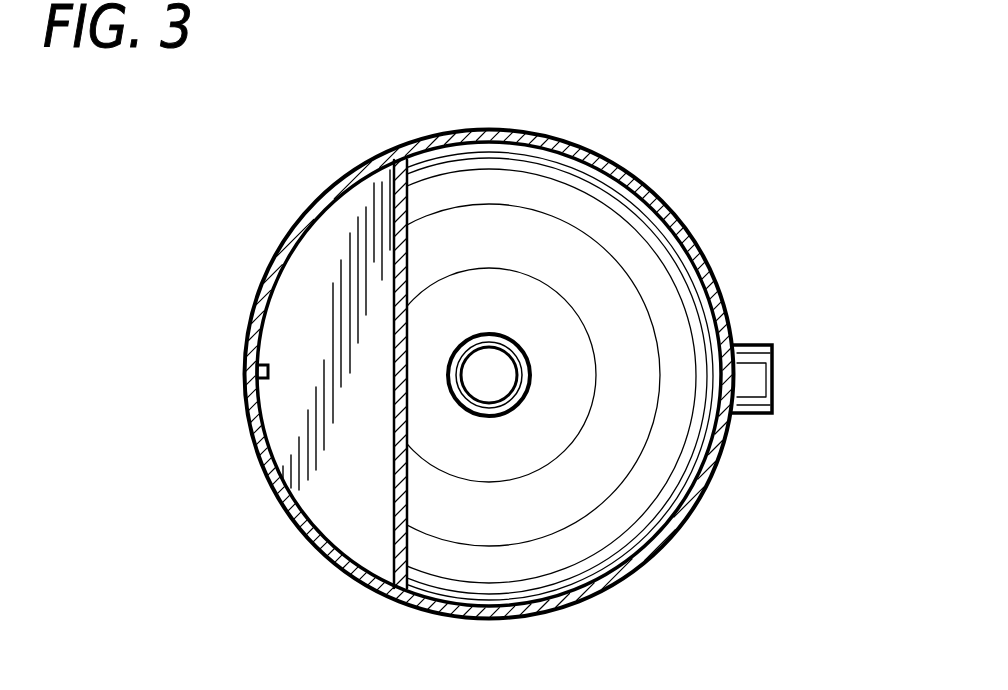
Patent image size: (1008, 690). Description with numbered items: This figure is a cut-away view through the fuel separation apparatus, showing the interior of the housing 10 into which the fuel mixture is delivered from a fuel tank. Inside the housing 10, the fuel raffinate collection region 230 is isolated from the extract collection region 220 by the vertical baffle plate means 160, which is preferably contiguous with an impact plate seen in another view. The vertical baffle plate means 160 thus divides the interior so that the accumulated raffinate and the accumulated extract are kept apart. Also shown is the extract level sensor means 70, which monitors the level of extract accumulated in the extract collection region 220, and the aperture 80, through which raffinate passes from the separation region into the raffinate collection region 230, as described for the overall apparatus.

The housing 10 is at (677, 212).
The extract level sensor means 70 is at (775, 378).
The aperture 80 is at (258, 373).
The vertical baffle plate means 160 is at (410, 200).
The extract collection region 220 is at (645, 493).
The fuel raffinate collection region 230 is at (328, 238).